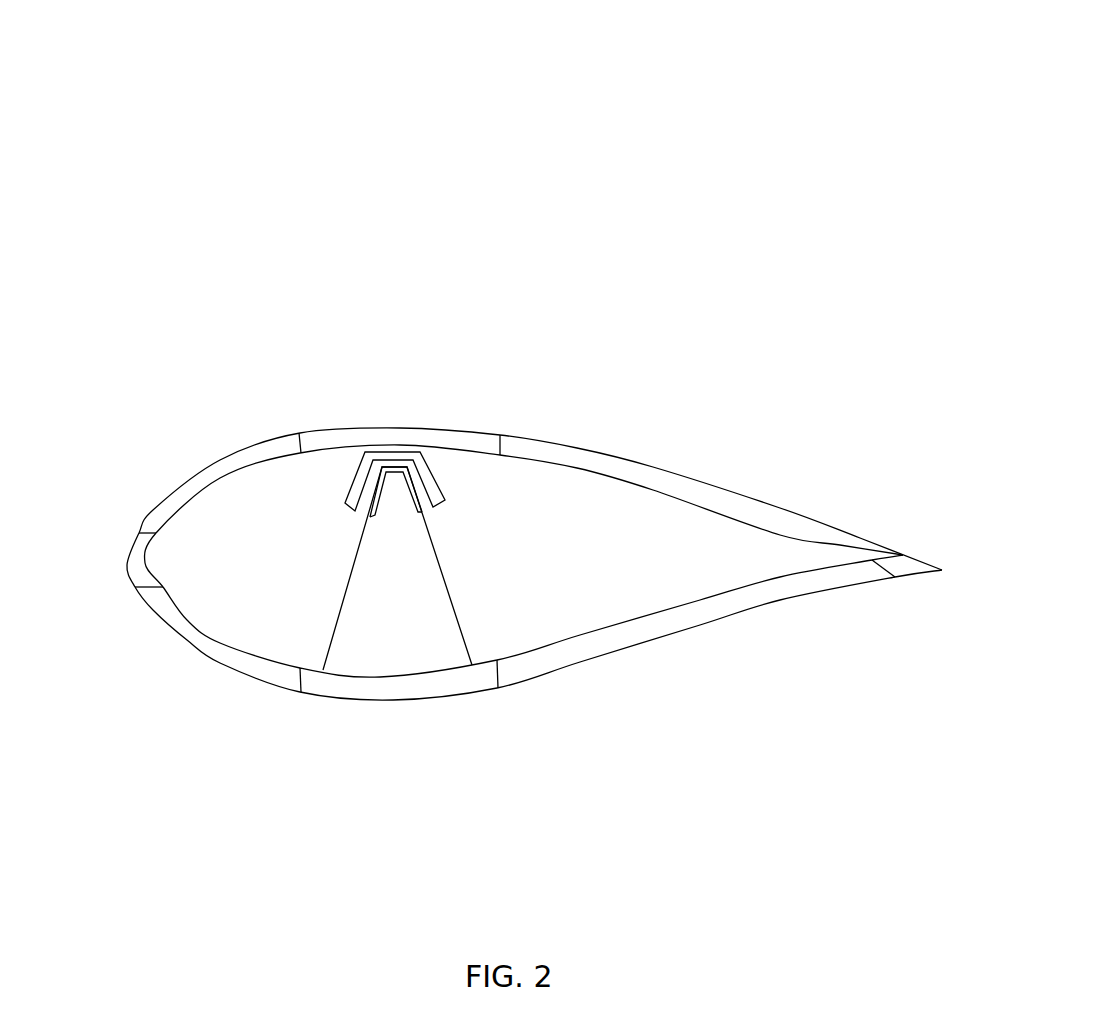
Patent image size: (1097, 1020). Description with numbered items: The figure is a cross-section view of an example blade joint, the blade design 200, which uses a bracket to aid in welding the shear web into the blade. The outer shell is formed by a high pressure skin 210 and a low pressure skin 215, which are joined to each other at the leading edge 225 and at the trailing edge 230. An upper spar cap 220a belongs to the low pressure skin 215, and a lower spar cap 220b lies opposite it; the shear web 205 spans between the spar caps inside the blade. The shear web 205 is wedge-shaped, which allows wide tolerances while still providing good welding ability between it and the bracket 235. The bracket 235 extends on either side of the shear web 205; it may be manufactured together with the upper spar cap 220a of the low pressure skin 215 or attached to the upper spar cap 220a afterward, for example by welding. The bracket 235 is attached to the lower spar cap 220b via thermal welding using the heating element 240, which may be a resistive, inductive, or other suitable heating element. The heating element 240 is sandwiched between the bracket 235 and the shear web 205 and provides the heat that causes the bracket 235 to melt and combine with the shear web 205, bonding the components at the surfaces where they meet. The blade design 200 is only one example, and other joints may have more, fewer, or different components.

The blade design 200 is at (717, 92).
The shear web 205 is at (402, 607).
The high pressure skin 210 is at (215, 670).
The low pressure skin 215 is at (655, 461).
The upper spar cap 220a is at (393, 437).
The lower spar cap 220b is at (393, 690).
The leading edge 225 is at (135, 562).
The trailing edge 230 is at (905, 566).
The bracket 235 is at (437, 473).
The heating element 240 is at (418, 493).